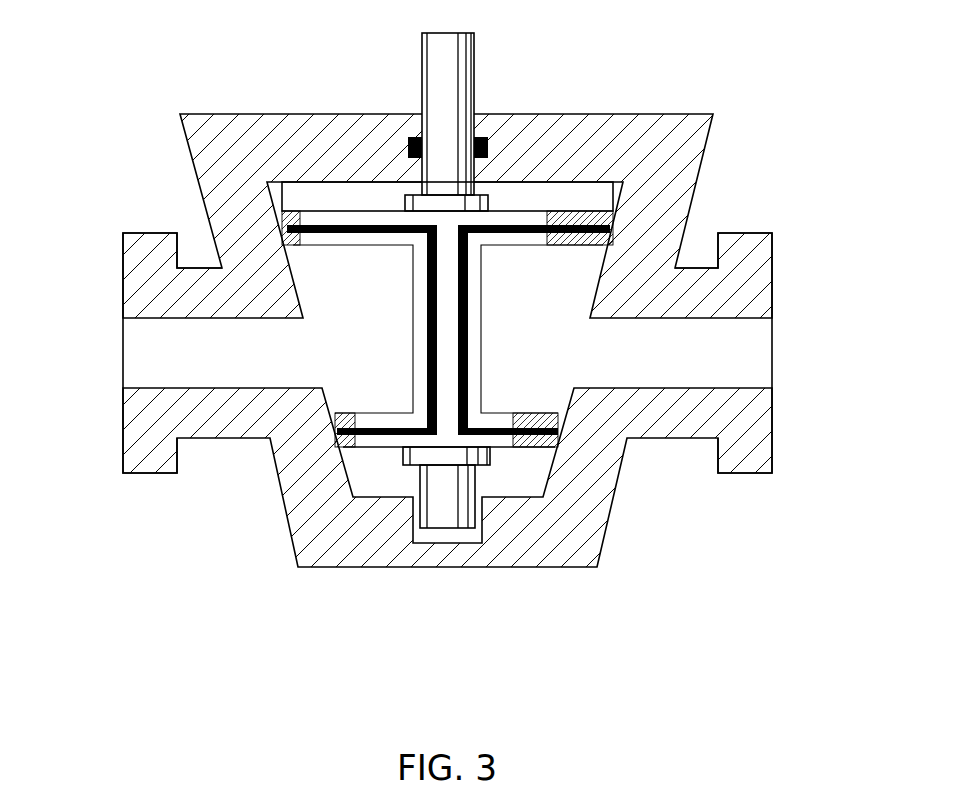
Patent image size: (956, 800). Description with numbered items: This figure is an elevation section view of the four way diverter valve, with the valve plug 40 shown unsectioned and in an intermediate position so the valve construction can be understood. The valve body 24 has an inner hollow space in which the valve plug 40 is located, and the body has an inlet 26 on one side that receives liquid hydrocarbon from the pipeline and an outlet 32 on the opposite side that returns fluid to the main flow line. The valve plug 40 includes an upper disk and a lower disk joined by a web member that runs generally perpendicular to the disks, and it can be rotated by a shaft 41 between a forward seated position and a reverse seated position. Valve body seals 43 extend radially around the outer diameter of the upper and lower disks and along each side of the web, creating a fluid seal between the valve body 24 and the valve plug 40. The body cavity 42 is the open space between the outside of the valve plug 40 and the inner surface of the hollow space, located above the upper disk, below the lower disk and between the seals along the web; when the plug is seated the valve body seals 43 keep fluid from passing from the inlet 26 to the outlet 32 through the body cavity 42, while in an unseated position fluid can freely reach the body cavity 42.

The valve body 24 is at (573, 540).
The inlet 26 is at (158, 288).
The outlet 32 is at (753, 284).
The valve plug 40 is at (423, 283).
The shaft 41 is at (475, 57).
The body cavity 42 is at (323, 198).
The valve body seals 43 is at (582, 225).